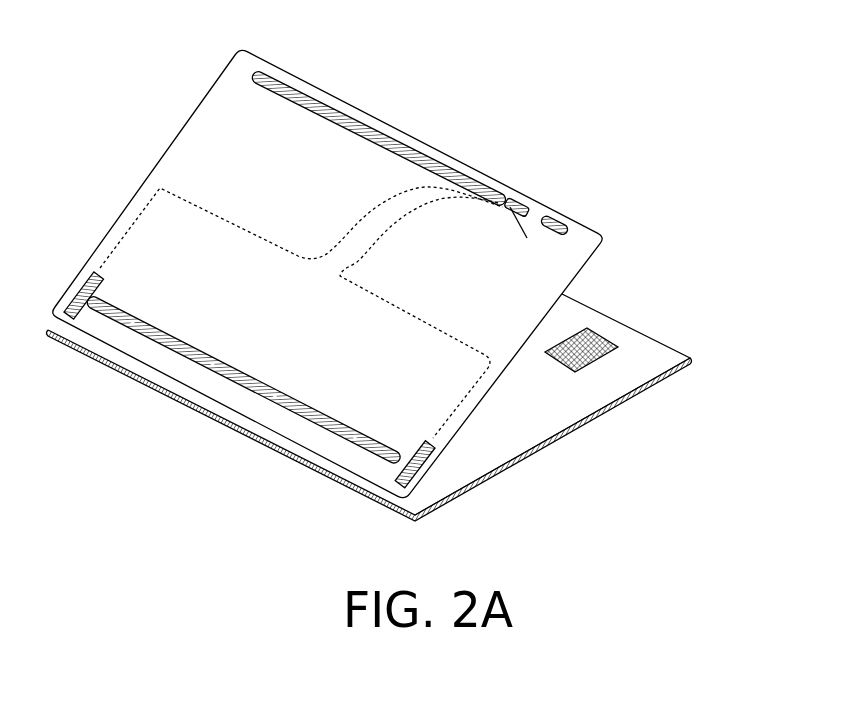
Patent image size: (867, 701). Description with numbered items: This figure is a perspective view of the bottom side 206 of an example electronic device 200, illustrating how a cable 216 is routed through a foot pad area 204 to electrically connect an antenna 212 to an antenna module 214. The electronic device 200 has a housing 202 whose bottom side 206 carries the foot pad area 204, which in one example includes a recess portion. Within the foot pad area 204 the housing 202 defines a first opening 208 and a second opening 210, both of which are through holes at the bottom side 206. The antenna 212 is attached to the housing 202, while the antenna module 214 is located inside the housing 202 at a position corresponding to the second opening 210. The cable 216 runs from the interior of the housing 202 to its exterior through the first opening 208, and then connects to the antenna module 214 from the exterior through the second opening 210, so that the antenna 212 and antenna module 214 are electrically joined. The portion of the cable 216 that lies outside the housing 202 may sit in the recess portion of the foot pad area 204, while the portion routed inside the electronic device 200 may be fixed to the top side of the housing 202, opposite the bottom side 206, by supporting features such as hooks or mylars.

The electronic device 200 is at (404, 298).
The housing 202 is at (404, 388).
The foot pad area 204 is at (284, 81).
The bottom side 206 is at (339, 261).
The first opening 208 is at (513, 195).
The second opening 210 is at (546, 210).
The antenna 212 is at (410, 469).
The antenna module 214 is at (618, 348).
The cable 216 is at (453, 412).